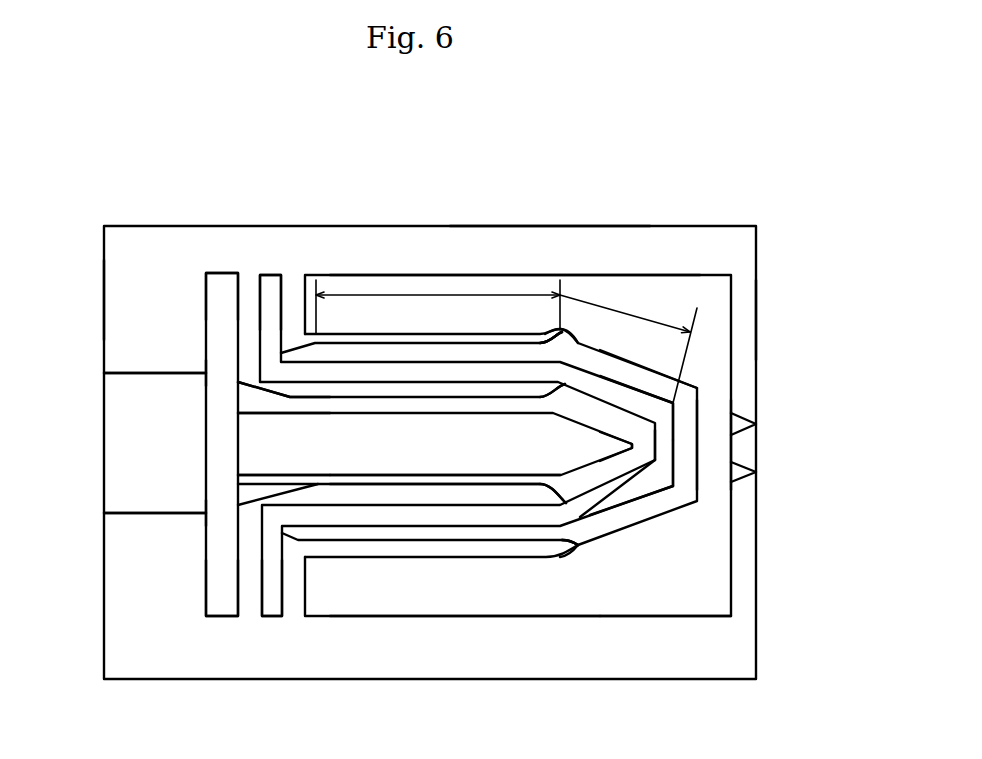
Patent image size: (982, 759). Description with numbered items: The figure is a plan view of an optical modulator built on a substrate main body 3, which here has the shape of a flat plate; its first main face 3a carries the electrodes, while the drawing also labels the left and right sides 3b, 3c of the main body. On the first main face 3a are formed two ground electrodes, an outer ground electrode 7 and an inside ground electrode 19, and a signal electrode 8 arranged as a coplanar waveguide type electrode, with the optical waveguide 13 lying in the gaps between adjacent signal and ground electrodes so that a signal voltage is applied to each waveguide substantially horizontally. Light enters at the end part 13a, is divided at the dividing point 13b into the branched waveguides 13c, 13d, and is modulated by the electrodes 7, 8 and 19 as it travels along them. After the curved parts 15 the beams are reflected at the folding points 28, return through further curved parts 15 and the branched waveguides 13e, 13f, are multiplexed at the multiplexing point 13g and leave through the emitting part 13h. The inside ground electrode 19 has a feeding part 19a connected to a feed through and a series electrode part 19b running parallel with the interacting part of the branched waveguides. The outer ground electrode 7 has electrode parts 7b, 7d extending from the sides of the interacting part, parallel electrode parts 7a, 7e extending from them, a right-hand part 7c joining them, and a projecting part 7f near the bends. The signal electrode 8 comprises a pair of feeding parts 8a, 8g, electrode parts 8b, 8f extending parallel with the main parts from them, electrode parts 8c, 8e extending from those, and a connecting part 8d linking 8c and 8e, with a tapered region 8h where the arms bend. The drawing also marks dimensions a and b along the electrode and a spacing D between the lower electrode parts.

The substrate main body 3 is at (665, 223).
The first main face 3a is at (540, 235).
The left side of housing 3b is at (104, 300).
The right side of housing 3c is at (758, 318).
The outer ground electrode 7 is at (462, 274).
The electrode part 7a is at (498, 285).
The electrode part 7b is at (673, 293).
The right frame portion 7c is at (722, 405).
The electrode part 7d is at (668, 612).
The electrode part 7e is at (459, 619).
The frame projection 7f is at (570, 330).
The signal electrode 8 is at (264, 270).
The feeding part 8a is at (277, 277).
The electrode part 8b is at (463, 370).
The electrode part 8c is at (620, 387).
The connecting part 8d is at (670, 437).
The electrode part 8e is at (632, 495).
The electrode part 8f is at (445, 513).
The feeding part 8g is at (275, 604).
The tapered end of outer conductor 8h is at (570, 367).
The optical waveguide 13 is at (162, 357).
The end part 13a is at (133, 373).
The dividing point 13b is at (204, 372).
The branched waveguide 13c is at (258, 360).
The branched waveguide 13d is at (258, 385).
The branched waveguide 13e is at (653, 480).
The branched waveguide 13f is at (500, 540).
The multiplexing point 13g is at (197, 513).
The emitting part 13h is at (150, 512).
The curved part 15 is at (550, 403).
The inside ground electrode 19 is at (203, 270).
The feeding part 19a is at (207, 308).
The electrode part 19b is at (397, 462).
The folding point 28 is at (757, 424).
The dimension a is at (438, 304).
The dimension b is at (628, 344).
The distance D is at (320, 487).